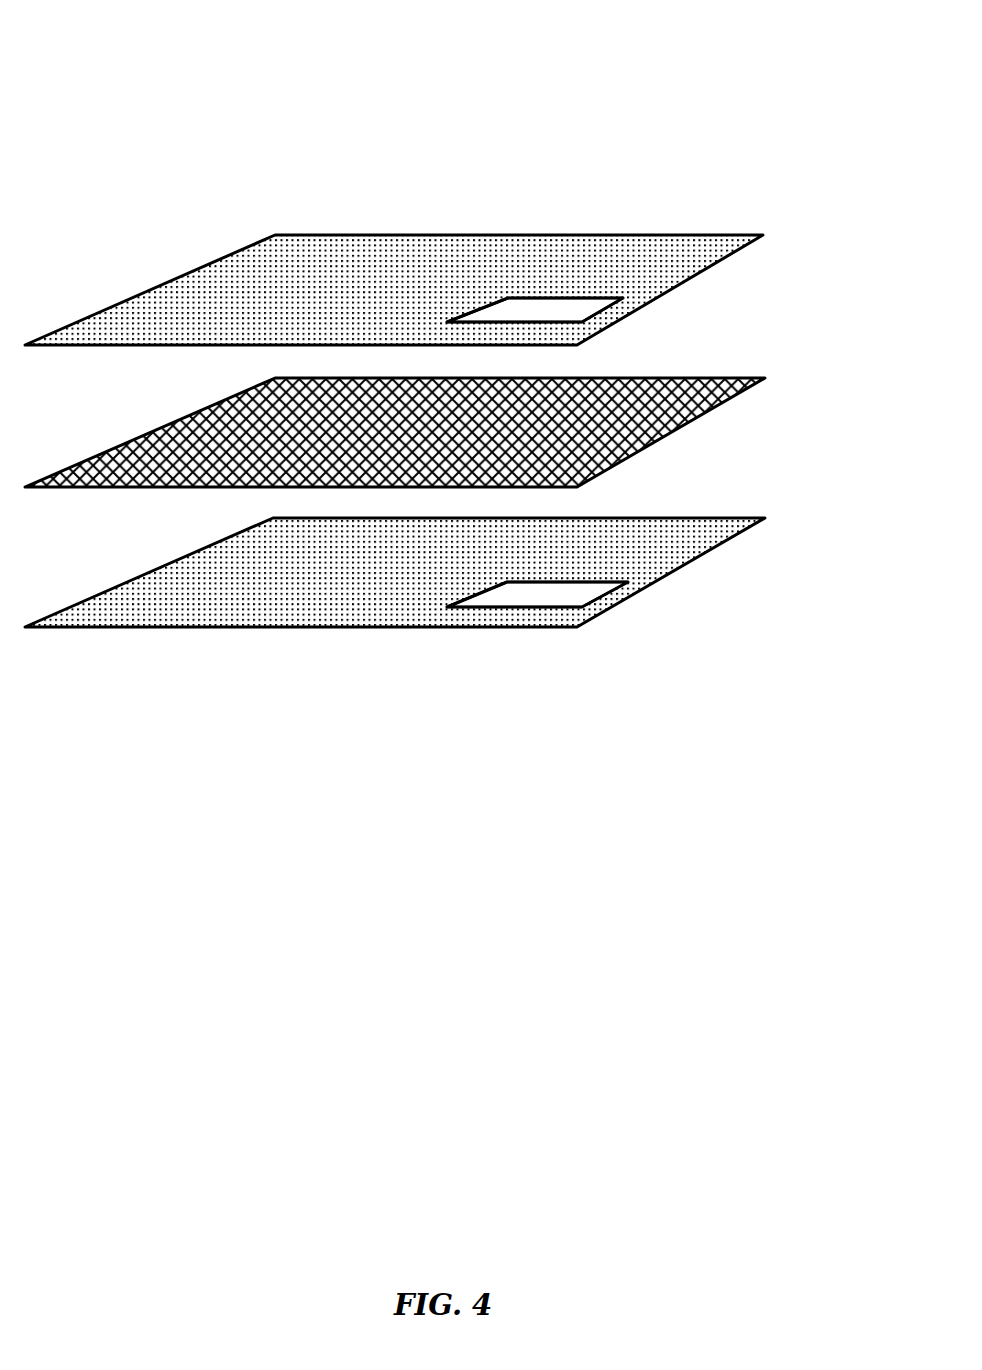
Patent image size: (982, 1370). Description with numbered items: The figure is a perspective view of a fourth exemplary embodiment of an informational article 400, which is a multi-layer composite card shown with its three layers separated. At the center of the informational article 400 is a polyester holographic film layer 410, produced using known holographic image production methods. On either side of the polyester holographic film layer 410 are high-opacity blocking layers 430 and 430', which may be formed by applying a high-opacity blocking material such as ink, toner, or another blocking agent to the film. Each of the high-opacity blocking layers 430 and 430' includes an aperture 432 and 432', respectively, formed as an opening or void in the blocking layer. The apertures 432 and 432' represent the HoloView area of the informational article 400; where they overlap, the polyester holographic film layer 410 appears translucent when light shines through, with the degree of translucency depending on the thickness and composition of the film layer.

The informational article 400 is at (121, 56).
The polyester holographic film layer 410 is at (680, 431).
The high-opacity blocking layer 430 is at (468, 290).
The aperture 432 is at (647, 332).
The high-opacity blocking layer 430' is at (463, 572).
The aperture 432' is at (651, 616).